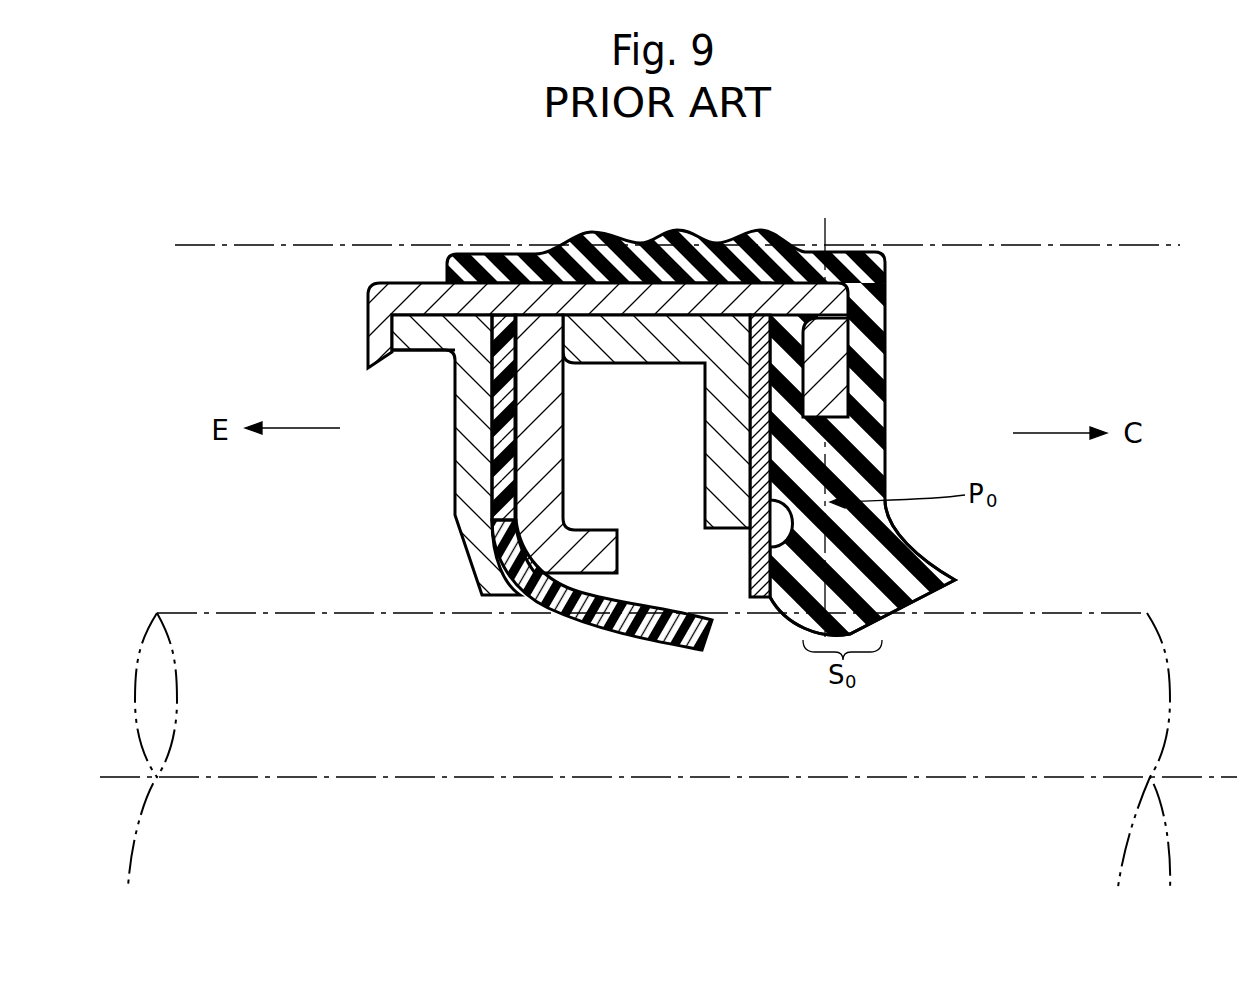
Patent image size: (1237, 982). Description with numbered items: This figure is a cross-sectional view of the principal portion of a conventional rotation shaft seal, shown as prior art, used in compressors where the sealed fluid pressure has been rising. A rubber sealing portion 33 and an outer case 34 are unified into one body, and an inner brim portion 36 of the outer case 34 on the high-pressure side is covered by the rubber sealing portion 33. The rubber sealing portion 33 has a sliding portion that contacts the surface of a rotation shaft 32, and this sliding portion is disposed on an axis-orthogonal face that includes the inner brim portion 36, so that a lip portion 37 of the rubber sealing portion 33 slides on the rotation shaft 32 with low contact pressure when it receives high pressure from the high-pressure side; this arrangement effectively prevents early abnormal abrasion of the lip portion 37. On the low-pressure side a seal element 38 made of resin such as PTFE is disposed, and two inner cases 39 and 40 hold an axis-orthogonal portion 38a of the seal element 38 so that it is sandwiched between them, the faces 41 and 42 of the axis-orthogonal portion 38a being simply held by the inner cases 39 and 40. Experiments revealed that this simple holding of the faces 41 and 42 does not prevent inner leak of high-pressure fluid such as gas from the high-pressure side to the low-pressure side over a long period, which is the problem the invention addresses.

The rotation shaft 32 is at (287, 613).
The rubber sealing portion 33 is at (884, 300).
The outer case 34 is at (723, 295).
The inner brim portion 36 is at (837, 357).
The lip portion 37 is at (878, 602).
The seal element 38 is at (586, 516).
The axis-orthogonal portion 38a is at (517, 410).
The inner case 39 is at (547, 478).
The inner case 40 is at (465, 476).
The face 41 is at (632, 363).
The face 42 is at (470, 383).